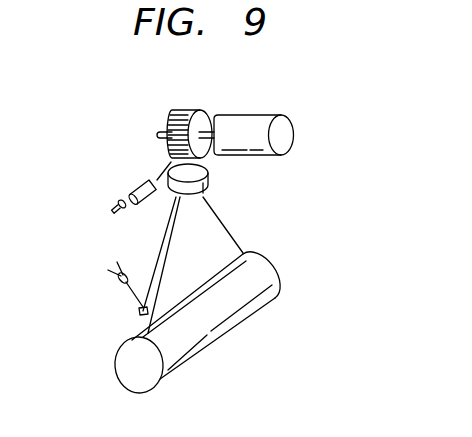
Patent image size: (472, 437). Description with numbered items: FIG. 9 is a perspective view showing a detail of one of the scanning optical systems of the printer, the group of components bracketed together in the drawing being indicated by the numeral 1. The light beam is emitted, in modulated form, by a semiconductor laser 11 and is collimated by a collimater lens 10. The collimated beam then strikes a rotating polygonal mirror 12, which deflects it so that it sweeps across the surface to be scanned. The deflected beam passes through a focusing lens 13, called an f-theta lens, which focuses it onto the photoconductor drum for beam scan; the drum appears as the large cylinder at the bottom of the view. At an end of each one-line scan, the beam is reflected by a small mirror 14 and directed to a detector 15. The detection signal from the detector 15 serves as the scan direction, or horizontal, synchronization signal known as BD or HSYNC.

The drive unit 1 is at (309, 107).
The collimater lens 10 is at (136, 182).
The semiconductor laser 11 is at (117, 204).
The rotating polygonal mirror 12 is at (194, 110).
The focusing lens 13 is at (209, 181).
The mirror 14 is at (139, 311).
The detector 15 is at (119, 279).